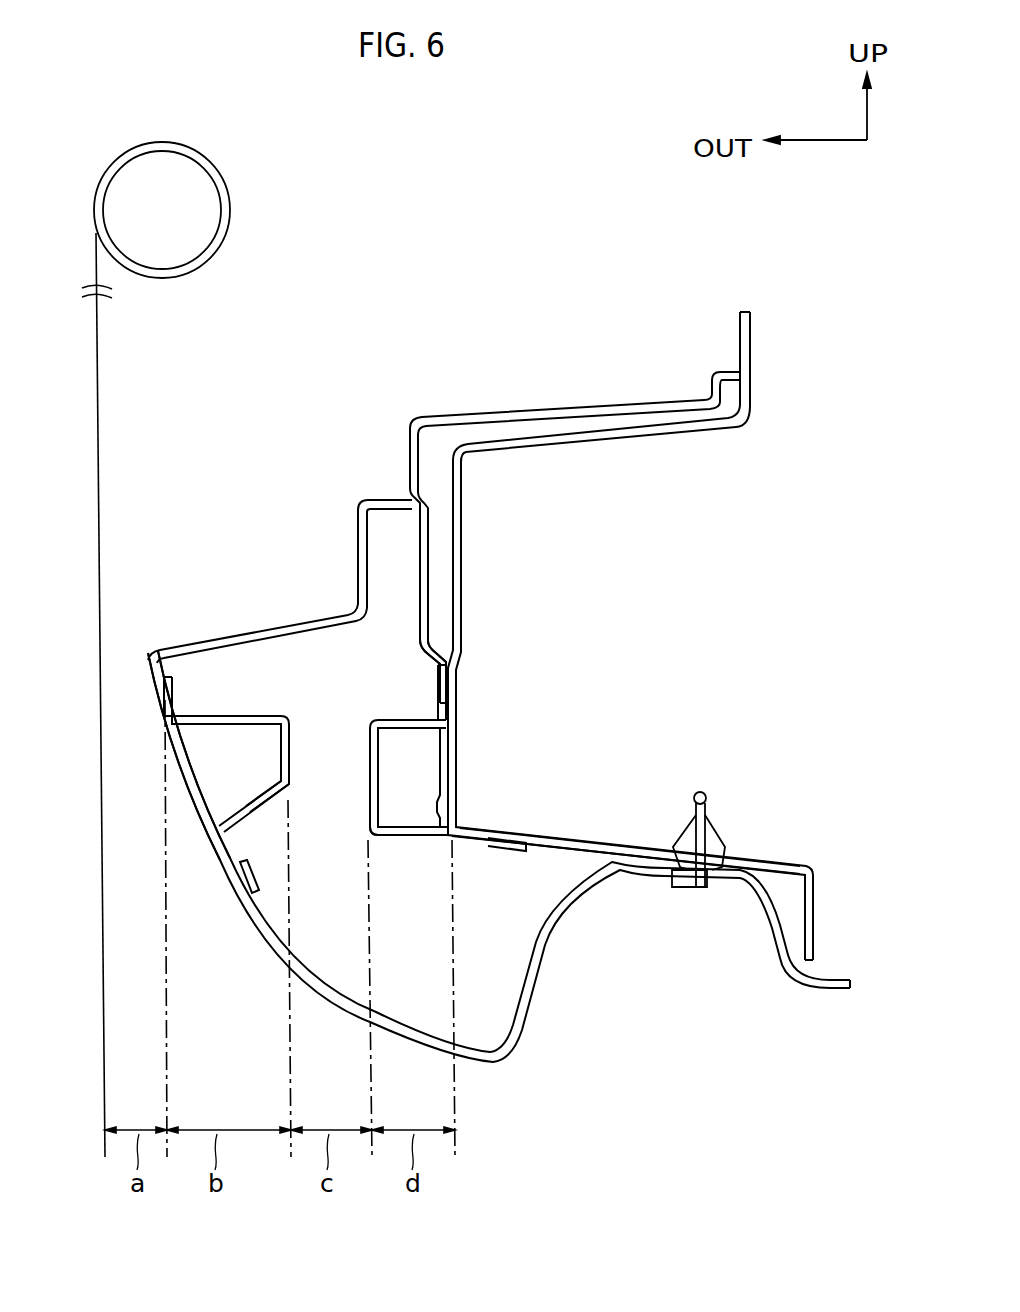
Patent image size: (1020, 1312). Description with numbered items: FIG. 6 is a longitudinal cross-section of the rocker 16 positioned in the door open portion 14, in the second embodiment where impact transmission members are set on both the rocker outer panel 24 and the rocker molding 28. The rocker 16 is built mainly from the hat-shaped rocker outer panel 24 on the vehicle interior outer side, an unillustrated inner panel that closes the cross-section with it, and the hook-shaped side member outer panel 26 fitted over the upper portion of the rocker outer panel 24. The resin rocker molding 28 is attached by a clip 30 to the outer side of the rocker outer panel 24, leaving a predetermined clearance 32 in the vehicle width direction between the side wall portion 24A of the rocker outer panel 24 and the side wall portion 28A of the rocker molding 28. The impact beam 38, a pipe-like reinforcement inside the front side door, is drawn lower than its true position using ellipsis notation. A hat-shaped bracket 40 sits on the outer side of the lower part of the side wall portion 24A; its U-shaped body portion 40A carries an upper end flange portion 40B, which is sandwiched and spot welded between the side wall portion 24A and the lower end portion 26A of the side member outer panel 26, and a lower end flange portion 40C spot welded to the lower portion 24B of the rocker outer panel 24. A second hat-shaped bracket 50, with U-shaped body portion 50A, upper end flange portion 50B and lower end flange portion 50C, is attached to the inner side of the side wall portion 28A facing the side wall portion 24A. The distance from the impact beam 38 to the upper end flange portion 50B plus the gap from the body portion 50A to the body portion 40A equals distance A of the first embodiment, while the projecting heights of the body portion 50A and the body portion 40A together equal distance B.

The door open portion 14 is at (565, 308).
The rocker 16 is at (462, 592).
The rocker outer panel 24 is at (630, 636).
The side wall portion 24A is at (461, 556).
The lower portion 24B is at (549, 836).
The side member outer panel 26 is at (474, 413).
The lower end portion 26A is at (440, 680).
The rocker molding 28 is at (157, 697).
The side wall portion 28A is at (186, 786).
The clip 30 is at (690, 890).
The clearance 32 is at (323, 680).
The impact beam 38 is at (232, 207).
The bracket 40 is at (384, 718).
The body portion 40A is at (370, 816).
The upper end flange portion 40B is at (450, 672).
The lower end flange portion 40C is at (492, 850).
The bracket 50 is at (258, 718).
The body portion 50A is at (290, 756).
The upper end flange portion 50B is at (183, 700).
The lower end flange portion 50C is at (248, 873).